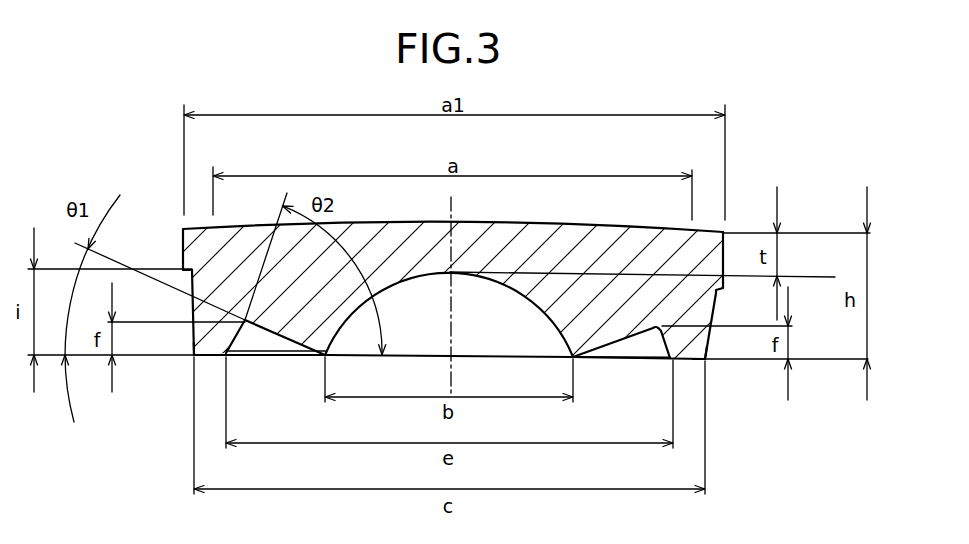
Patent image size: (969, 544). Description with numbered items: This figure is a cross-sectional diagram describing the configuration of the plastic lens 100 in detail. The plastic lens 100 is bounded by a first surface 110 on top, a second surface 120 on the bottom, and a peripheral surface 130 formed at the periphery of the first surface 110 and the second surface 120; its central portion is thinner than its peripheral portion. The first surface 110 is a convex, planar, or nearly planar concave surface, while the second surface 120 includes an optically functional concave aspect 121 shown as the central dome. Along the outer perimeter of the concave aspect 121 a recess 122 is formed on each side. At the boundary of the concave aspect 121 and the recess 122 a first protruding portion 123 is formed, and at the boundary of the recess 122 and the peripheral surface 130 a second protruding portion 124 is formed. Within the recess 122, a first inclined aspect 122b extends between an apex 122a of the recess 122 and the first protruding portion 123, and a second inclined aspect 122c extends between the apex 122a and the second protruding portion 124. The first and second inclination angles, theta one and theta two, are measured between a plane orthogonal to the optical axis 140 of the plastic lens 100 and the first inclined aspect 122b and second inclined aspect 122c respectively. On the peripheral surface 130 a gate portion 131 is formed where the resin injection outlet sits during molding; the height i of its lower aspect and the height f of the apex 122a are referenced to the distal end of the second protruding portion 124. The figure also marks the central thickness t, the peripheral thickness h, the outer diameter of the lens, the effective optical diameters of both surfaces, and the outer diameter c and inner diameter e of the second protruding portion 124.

The plastic lens 100 is at (707, 209).
The first surface 110 is at (487, 216).
The second surface 120 is at (472, 363).
The concave aspect 121 is at (505, 284).
The recess 122 is at (372, 313).
The apex 122a is at (245, 320).
The first inclined aspect 122b is at (288, 338).
The second inclined aspect 122c is at (238, 356).
The first protruding portion 123 is at (327, 358).
The second protruding portion 124 is at (193, 354).
The peripheral surface 130 is at (192, 288).
The gate portion 131 is at (183, 252).
The optical axis 140 is at (448, 364).